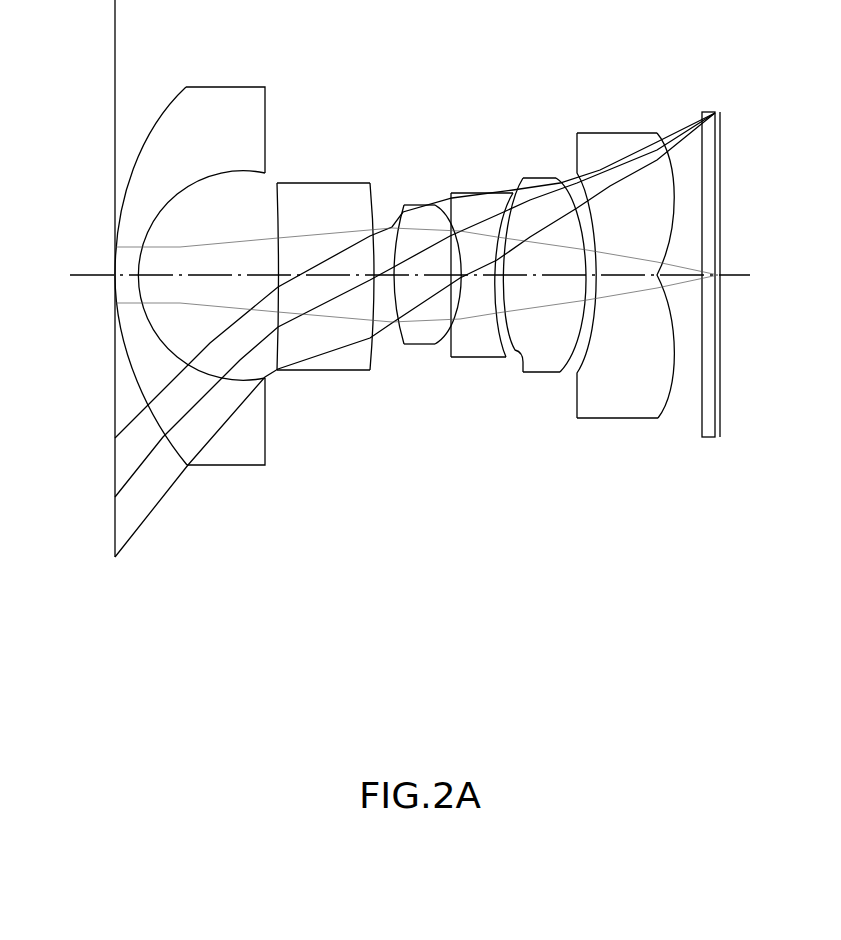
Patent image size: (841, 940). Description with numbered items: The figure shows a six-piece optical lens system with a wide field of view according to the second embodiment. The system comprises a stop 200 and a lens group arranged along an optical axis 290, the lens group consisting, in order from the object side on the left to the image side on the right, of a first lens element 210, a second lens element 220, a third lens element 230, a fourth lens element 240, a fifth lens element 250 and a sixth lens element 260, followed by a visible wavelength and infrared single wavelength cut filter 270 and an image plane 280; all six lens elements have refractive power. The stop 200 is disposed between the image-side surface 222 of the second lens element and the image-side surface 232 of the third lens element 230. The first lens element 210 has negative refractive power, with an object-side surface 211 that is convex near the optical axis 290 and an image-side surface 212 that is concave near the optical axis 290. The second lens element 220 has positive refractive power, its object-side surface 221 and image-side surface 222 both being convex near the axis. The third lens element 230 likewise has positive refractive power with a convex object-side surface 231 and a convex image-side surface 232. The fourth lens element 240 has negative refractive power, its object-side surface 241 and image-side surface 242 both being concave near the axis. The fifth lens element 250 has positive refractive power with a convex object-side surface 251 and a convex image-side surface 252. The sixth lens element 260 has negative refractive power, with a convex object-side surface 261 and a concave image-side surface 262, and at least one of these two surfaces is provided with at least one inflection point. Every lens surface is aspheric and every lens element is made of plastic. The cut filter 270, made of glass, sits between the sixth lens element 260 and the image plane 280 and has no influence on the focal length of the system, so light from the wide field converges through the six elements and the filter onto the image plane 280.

The stop 200 is at (410, 280).
The first lens element 210 is at (178, 273).
The object-side surface of the first lens element 211 is at (143, 363).
The image-side surface of the first lens element 212 is at (266, 425).
The second lens element 220 is at (331, 280).
The object-side surface of the second lens element 221 is at (278, 371).
The image-side surface of the second lens element 222 is at (372, 372).
The third lens element 230 is at (427, 294).
The object-side surface of the third lens element 231 is at (399, 345).
The image-side surface of the third lens element 232 is at (439, 348).
The fourth lens element 240 is at (486, 272).
The object-side surface of the fourth lens element 241 is at (453, 337).
The image-side surface of the fourth lens element 242 is at (501, 333).
The fifth lens element 250 is at (544, 296).
The object-side surface of the fifth lens element 251 is at (524, 352).
The image-side surface of the fifth lens element 252 is at (566, 373).
The sixth lens element 260 is at (625, 282).
The object-side surface of the sixth lens element 261 is at (578, 375).
The image-side surface of the sixth lens element 262 is at (668, 400).
The visible wavelength and infrared single wavelength cut filter 270 is at (709, 110).
The image plane 280 is at (720, 404).
The optical axis 290 is at (100, 274).